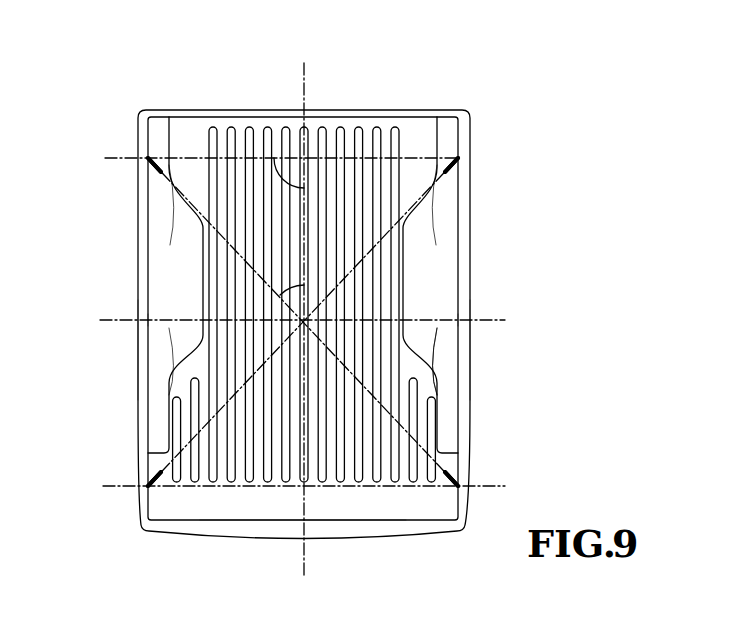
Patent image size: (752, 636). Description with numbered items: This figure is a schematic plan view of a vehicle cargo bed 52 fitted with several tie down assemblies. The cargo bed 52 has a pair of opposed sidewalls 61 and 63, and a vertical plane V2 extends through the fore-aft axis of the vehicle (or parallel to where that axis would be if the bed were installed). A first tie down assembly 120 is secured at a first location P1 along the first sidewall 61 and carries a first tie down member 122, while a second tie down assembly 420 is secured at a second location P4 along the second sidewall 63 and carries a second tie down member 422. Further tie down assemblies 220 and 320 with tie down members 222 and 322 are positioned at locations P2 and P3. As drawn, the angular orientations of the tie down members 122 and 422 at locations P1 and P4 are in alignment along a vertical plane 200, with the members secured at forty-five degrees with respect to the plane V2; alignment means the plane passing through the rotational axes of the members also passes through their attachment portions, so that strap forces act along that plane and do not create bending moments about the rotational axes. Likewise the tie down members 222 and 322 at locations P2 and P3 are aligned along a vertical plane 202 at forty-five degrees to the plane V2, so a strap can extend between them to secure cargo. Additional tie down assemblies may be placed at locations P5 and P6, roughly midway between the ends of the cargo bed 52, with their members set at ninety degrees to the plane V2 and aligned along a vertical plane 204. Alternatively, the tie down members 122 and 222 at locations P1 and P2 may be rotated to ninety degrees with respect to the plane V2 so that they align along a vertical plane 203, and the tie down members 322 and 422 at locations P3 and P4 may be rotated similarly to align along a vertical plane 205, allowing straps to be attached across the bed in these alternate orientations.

The vehicle cargo bed 52 is at (260, 128).
The first sidewall 61 is at (138, 362).
The second sidewall 63 is at (460, 338).
The first tie down assembly 120 is at (148, 158).
The first tie down member 122 is at (153, 157).
The vertical plane 200 is at (243, 249).
The vertical plane 202 is at (375, 272).
The vertical plane 203 is at (363, 130).
The vertical plane 204 is at (440, 362).
The vertical plane 205 is at (338, 488).
The tie down assembly 220 is at (458, 157).
The tie down member 222 is at (447, 170).
The tie down assembly 320 is at (148, 482).
The tie down member 322 is at (160, 475).
The second tie down assembly 420 is at (462, 487).
The second tie down member 422 is at (447, 478).
The first location P1 is at (148, 158).
The location P2 is at (458, 158).
The location P3 is at (148, 486).
The second location P4 is at (458, 486).
The location P5 is at (150, 310).
The location P6 is at (458, 312).
The vertical plane V2 is at (307, 73).